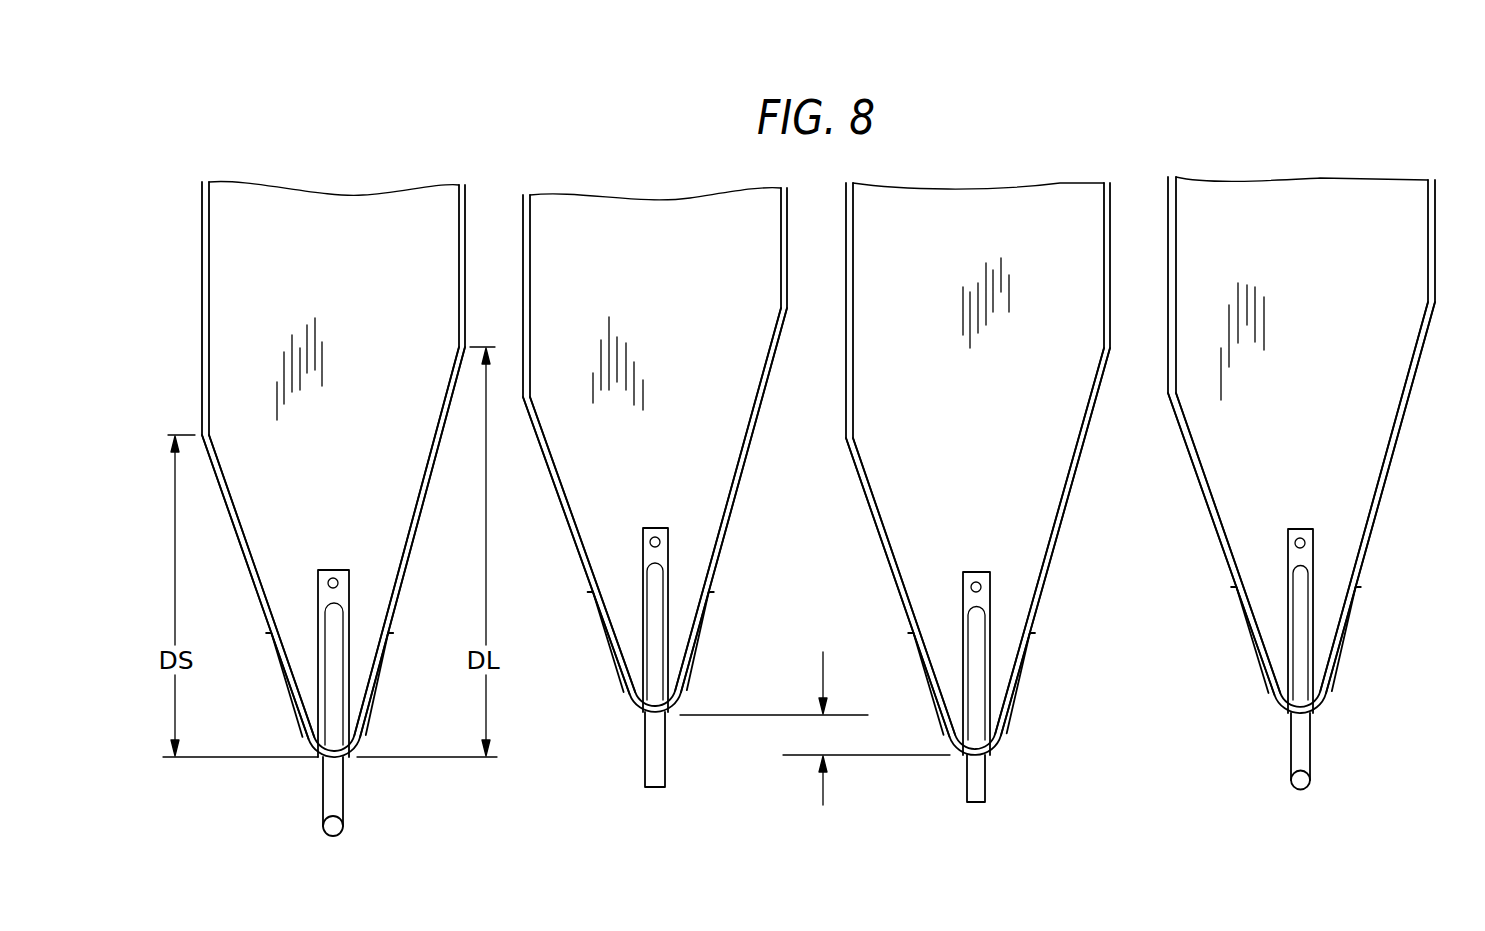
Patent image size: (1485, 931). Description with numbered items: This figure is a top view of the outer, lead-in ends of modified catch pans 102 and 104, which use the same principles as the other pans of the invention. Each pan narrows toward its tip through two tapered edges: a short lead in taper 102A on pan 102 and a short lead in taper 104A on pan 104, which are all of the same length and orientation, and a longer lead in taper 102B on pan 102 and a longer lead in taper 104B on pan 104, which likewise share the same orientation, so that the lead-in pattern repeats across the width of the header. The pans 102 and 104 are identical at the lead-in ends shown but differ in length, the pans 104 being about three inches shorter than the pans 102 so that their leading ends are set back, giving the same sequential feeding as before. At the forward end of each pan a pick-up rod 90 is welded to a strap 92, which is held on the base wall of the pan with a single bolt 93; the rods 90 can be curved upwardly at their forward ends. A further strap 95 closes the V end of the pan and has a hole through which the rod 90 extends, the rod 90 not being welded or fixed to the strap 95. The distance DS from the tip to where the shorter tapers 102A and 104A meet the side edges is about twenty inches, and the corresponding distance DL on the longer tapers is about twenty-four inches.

The pick-up rod 90 is at (343, 788).
The strap 92 is at (317, 587).
The bolt 93 is at (336, 578).
The strap 95 is at (380, 678).
The modified pan 102 is at (375, 222).
The short lead in taper 102A is at (240, 512).
The longer lead in taper 102B is at (413, 540).
The modified pan 104 is at (663, 220).
The short lead in taper 104A is at (567, 488).
The longer lead in taper 104B is at (732, 512).